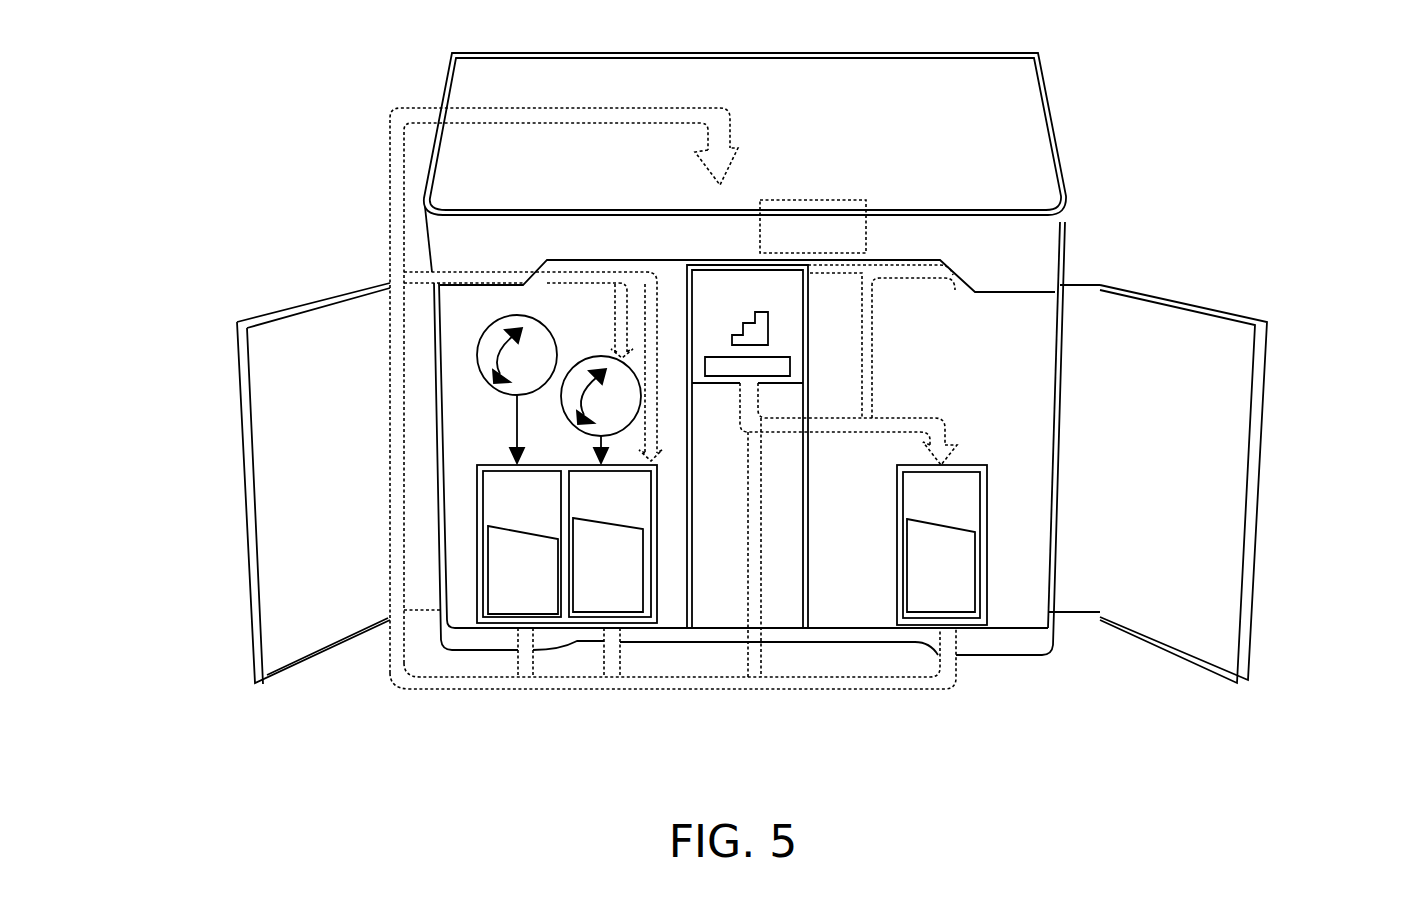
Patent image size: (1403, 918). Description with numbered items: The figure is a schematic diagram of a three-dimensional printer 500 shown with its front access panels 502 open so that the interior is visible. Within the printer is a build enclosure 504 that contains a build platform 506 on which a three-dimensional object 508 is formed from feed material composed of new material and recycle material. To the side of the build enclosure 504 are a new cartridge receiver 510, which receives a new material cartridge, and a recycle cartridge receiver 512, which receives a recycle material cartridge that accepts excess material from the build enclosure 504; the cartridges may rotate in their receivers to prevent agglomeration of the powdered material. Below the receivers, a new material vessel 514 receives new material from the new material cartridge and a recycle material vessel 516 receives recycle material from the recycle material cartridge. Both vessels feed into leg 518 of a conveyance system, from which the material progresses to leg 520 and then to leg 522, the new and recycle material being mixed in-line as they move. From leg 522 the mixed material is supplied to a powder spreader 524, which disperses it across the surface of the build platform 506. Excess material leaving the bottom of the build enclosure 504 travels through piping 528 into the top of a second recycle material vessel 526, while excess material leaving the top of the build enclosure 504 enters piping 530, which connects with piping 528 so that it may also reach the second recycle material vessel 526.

The 3D printer 500 is at (709, 806).
The front access panels 502 is at (297, 563).
The build enclosure 504 is at (740, 258).
The build platform 506 is at (703, 383).
The 3D object 508 is at (768, 330).
The new cartridge receiver 510 is at (507, 393).
The recycle cartridge receiver 512 is at (568, 422).
The new material vessel 514 is at (522, 585).
The recycle material vessel 516 is at (600, 578).
The leg of conveyance system 518 is at (712, 690).
The leg of conveyance system 520 is at (397, 130).
The leg of conveyance system 522 is at (718, 110).
The powder spreader 524 is at (827, 200).
The second recycle material vessel 526 is at (968, 628).
The piping 528 is at (818, 434).
The piping 530 is at (872, 347).